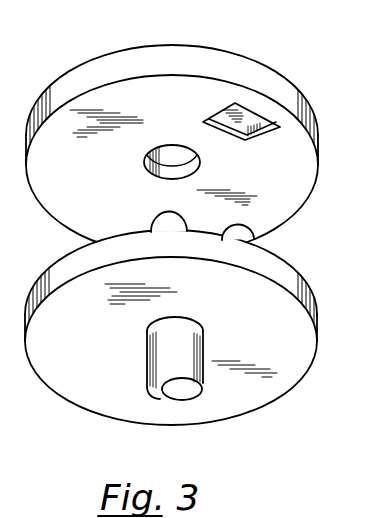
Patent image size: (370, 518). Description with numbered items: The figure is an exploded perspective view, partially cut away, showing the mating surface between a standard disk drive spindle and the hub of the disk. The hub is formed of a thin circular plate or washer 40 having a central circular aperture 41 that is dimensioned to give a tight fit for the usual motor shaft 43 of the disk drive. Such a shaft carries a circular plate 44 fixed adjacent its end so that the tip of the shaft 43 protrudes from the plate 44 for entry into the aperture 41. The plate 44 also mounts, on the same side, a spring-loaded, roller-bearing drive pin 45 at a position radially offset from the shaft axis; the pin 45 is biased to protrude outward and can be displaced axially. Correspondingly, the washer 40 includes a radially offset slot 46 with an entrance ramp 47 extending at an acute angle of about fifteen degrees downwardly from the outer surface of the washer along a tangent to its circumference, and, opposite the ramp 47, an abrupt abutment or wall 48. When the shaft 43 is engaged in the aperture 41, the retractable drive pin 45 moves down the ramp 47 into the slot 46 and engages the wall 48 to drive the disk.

The washer 40 is at (194, 58).
The central circular aperture 41 is at (157, 165).
The motor shaft 43 is at (152, 352).
The circular plate 44 is at (287, 273).
The drive pin 45 is at (254, 238).
The slot 46 is at (263, 121).
The entrance ramp 47 is at (243, 120).
The wall 48 is at (256, 146).